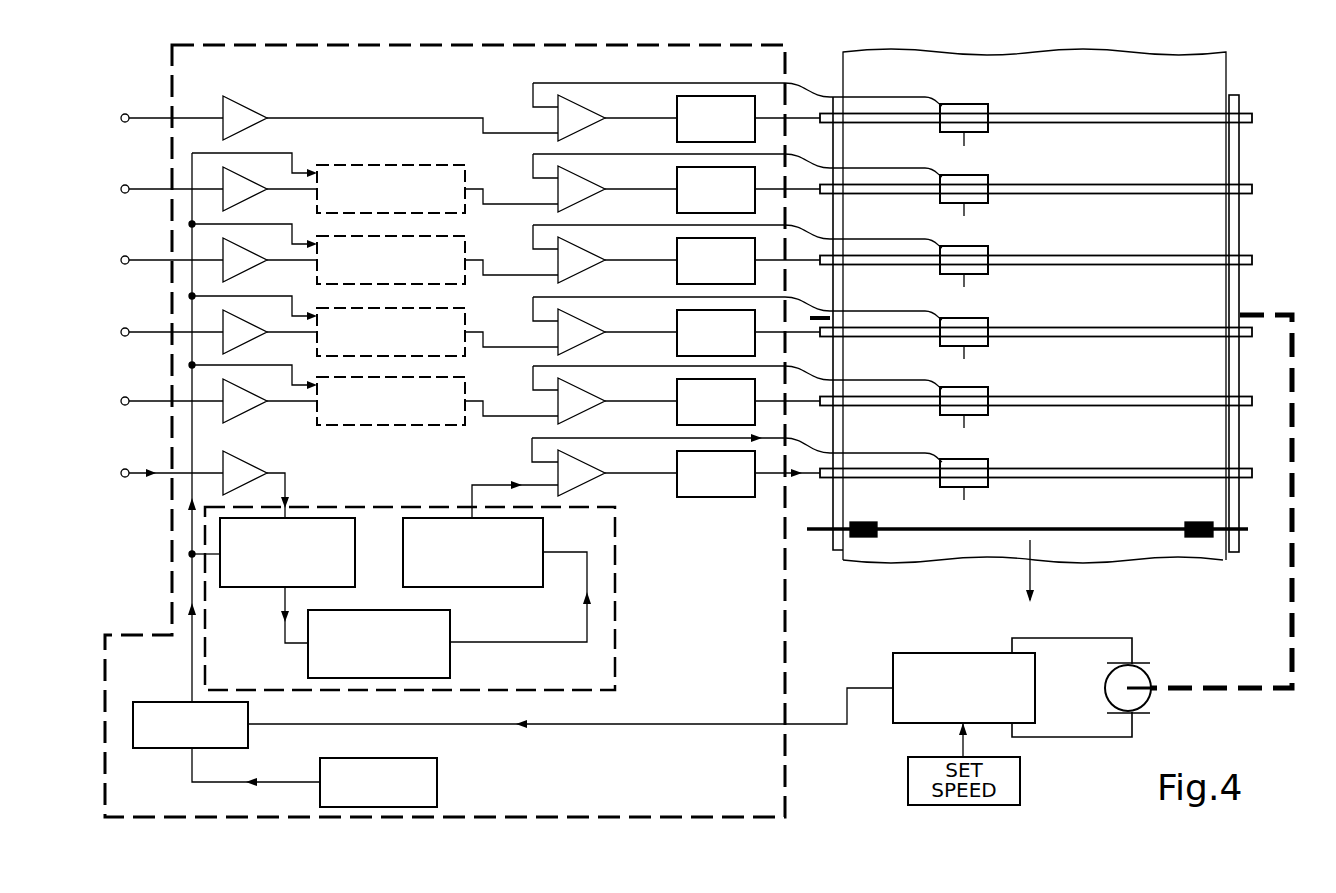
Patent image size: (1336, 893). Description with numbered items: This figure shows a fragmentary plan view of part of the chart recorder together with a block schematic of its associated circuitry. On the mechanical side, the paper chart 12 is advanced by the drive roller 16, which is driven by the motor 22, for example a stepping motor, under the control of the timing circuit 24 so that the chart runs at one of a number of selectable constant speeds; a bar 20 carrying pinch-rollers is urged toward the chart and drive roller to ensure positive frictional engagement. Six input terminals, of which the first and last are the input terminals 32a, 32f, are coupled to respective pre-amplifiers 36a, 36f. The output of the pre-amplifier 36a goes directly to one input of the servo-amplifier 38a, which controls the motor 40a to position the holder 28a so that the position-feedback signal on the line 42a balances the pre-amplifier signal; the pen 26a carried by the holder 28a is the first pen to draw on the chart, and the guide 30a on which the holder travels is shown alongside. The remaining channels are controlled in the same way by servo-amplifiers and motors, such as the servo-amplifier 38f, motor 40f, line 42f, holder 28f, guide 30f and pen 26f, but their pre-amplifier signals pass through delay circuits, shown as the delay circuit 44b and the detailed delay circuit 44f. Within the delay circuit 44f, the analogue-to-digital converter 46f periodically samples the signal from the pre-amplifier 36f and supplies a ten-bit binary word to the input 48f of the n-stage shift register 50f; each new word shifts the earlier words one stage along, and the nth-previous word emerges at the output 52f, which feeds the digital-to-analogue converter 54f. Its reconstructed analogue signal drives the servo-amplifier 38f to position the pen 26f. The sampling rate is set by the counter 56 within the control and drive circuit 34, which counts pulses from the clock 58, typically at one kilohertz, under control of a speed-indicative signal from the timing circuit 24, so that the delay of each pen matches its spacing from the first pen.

The chart 12 is at (1147, 303).
The drive roller 16 is at (1236, 228).
The bar 20 is at (1108, 532).
The motor 22 is at (1143, 674).
The timing circuit 24 is at (948, 655).
The pen 26a is at (964, 146).
The pen 26f is at (964, 500).
The holder 28a is at (972, 115).
The holder 28f is at (971, 471).
The guide bar 30a is at (1109, 113).
The guide bar 30f is at (1109, 469).
The input terminal 32a is at (135, 104).
The input terminal 32f is at (135, 459).
The control and drive circuit 34 is at (788, 681).
The pre-amplifier 36a is at (243, 118).
The pre-amplifier 36f is at (240, 472).
The servo-amplifier 38a is at (578, 113).
The servo-amplifier 38f is at (578, 469).
The motor 40a is at (733, 130).
The motor 40f is at (732, 485).
The line 42a is at (617, 83).
The line 42f is at (600, 438).
The delay circuit 44b is at (378, 166).
The delay circuit 44f is at (623, 590).
The analogue-to-digital converter 46f is at (252, 588).
The input 48f is at (300, 647).
The n-stage shift register 50f is at (450, 622).
The output 52f is at (458, 643).
The digital-to-analogue converter 54f is at (543, 531).
The counter 56 is at (157, 748).
The clock 58 is at (437, 775).